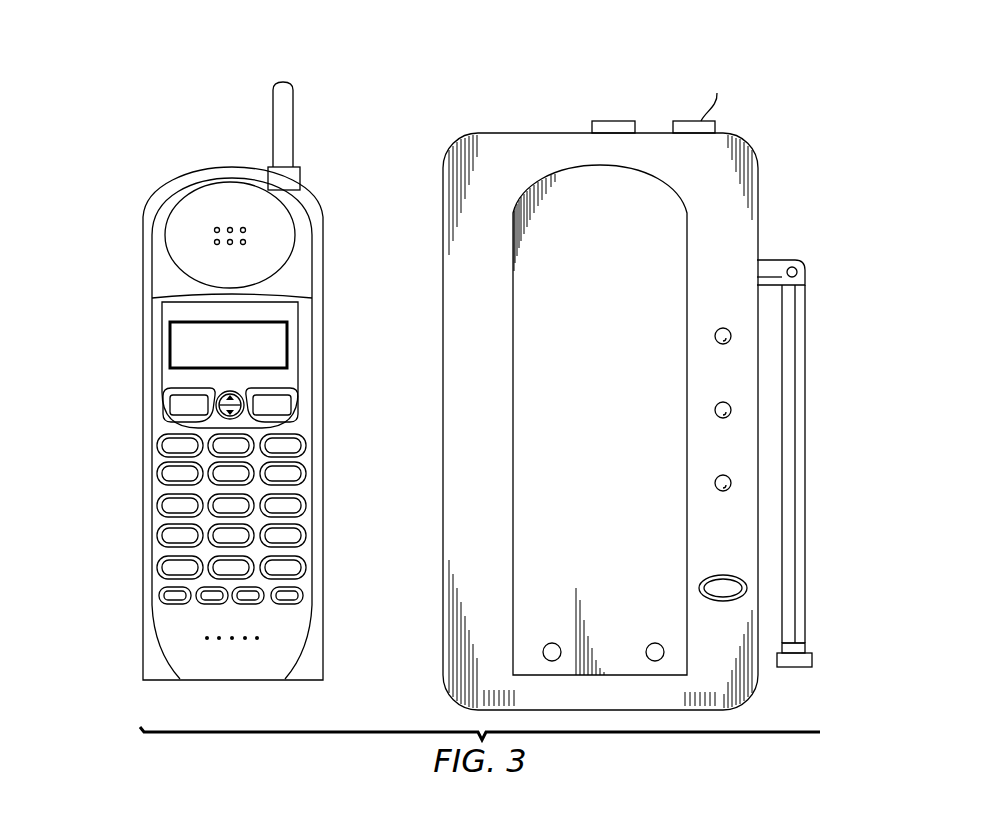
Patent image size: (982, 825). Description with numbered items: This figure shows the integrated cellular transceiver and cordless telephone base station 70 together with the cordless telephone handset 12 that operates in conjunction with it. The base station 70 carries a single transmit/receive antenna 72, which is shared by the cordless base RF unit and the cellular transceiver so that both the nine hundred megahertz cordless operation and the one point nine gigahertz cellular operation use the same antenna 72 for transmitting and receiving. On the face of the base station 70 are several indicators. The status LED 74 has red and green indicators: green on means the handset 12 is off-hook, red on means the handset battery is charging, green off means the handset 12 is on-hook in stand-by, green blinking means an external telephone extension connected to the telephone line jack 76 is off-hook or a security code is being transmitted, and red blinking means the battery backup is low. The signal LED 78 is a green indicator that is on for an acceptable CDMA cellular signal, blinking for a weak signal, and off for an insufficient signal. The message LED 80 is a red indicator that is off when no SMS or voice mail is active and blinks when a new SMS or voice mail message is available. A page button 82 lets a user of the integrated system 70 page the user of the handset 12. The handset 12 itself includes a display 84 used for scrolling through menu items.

The cordless telephone handset 12 is at (114, 362).
The integrated cellular transceiver and cordless telephone base station 70 is at (802, 186).
The transmit/receive antenna 72 is at (808, 512).
The status LED 74 is at (715, 336).
The RJ-11 jack 76 is at (603, 121).
The signal LED 78 is at (715, 410).
The message LED 80 is at (715, 483).
The page button 82 is at (699, 588).
The display 84 is at (290, 343).